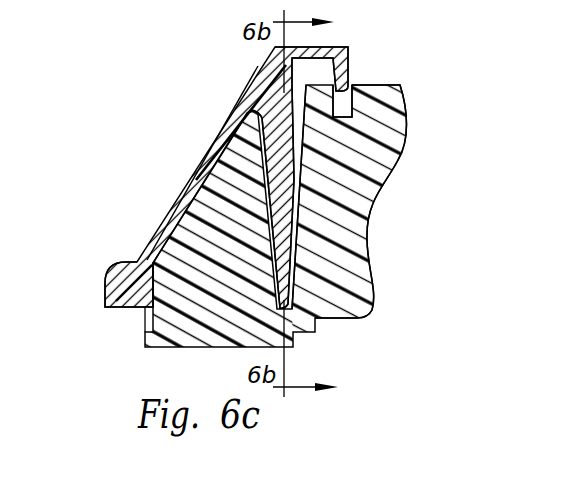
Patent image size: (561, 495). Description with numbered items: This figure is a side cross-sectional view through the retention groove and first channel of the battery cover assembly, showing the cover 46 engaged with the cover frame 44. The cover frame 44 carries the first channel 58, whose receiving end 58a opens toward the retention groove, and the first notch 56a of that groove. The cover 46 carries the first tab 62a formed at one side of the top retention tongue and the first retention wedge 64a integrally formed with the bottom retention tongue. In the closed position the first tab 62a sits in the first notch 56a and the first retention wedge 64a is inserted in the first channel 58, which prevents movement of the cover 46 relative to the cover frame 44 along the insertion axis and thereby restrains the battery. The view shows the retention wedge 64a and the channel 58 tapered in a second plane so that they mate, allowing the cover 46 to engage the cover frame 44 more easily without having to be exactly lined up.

The cover frame 44 is at (192, 337).
The cover 46 is at (122, 277).
The first notch 56a is at (407, 106).
The first channel 58 is at (303, 220).
The receiving end 58a is at (297, 153).
The first tab 62a is at (343, 73).
The first retention wedge 64a is at (287, 277).